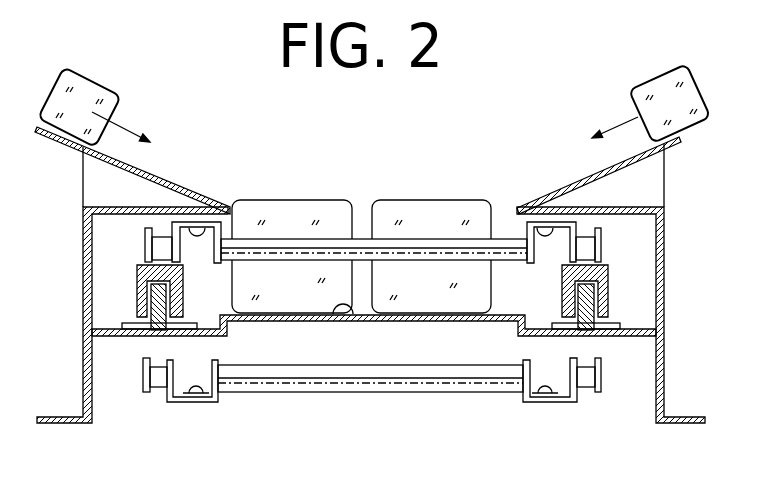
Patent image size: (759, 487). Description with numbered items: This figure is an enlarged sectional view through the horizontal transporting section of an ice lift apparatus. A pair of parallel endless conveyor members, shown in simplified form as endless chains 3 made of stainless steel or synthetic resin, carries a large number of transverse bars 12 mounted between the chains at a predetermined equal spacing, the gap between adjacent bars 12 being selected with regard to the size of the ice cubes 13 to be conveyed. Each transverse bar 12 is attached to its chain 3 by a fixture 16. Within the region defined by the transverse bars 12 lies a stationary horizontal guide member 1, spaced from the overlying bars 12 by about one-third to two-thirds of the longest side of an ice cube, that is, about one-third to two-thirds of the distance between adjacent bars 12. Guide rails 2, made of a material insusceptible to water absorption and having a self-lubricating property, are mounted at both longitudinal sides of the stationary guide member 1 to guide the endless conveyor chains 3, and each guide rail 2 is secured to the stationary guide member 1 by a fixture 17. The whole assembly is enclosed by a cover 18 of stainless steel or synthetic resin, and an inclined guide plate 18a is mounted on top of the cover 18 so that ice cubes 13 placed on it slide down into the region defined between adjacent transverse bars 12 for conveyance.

The stationary horizontal guide member 1 is at (337, 322).
The guide rail 2 is at (136, 268).
The endless chain 3 is at (157, 228).
The transverse bar 12 is at (497, 238).
The ice cube 13 is at (335, 213).
The fixture 16 is at (224, 224).
The fixture 17 is at (124, 327).
The cover 18 is at (83, 300).
The inclined guide plate 18a is at (183, 190).